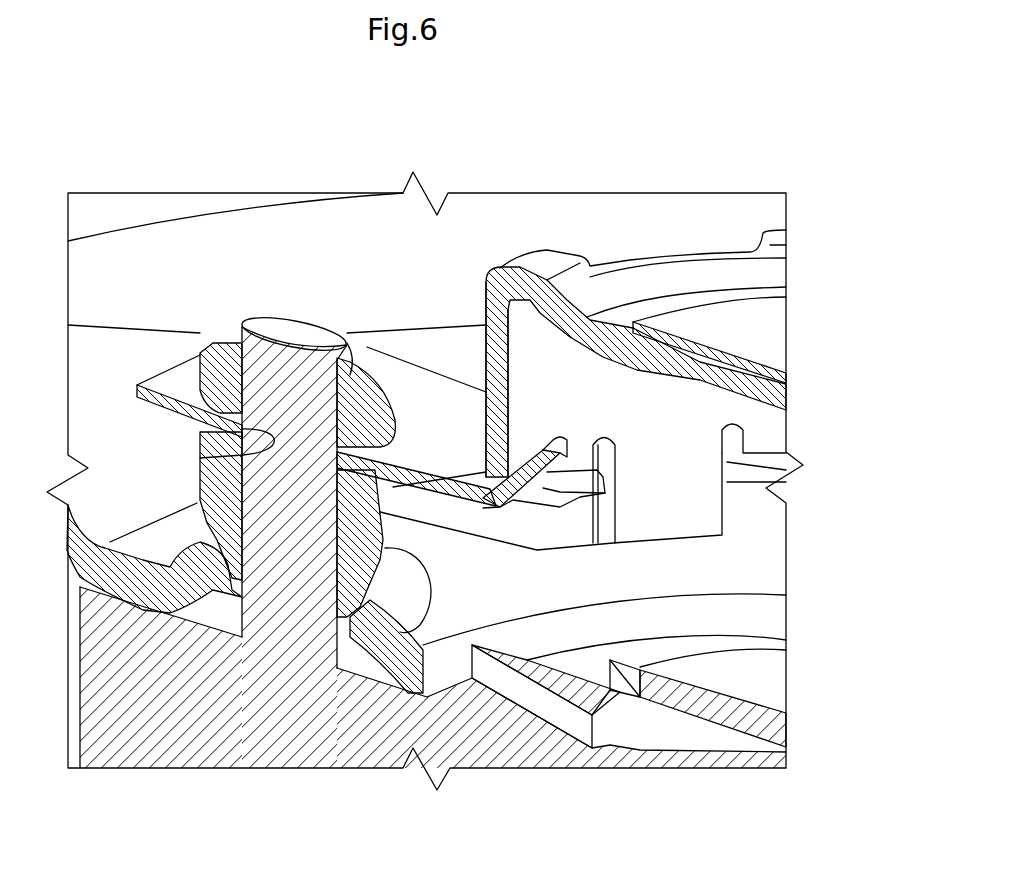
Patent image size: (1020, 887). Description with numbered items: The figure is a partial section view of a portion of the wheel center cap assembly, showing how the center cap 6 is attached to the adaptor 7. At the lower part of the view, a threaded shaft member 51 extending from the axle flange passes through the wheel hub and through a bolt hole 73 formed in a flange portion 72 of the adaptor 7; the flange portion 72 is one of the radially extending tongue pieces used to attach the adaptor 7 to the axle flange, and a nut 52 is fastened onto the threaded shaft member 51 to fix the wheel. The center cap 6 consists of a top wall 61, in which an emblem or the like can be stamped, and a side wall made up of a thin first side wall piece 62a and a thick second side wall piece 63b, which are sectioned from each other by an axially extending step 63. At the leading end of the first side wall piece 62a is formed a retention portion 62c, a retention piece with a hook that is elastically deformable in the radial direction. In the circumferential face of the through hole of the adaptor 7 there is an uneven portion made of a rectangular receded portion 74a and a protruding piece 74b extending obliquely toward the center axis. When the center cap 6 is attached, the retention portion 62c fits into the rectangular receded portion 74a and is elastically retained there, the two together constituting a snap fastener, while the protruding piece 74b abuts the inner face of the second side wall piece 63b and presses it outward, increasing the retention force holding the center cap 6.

The center cap 6 is at (730, 250).
The adaptor 7 is at (187, 353).
The threaded shaft member 51 is at (298, 330).
The nut 52 is at (226, 352).
The top wall 61 is at (690, 305).
The first side wall piece 62a is at (700, 493).
The retention portion 62c is at (620, 470).
The step 63 is at (633, 258).
The second side wall piece 63b is at (490, 345).
The flange portion 72 is at (173, 381).
The bolt hole 73 is at (200, 458).
The rectangular receded portion 74a is at (620, 470).
The protruding piece 74b is at (528, 470).